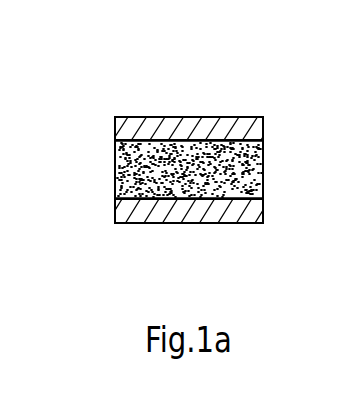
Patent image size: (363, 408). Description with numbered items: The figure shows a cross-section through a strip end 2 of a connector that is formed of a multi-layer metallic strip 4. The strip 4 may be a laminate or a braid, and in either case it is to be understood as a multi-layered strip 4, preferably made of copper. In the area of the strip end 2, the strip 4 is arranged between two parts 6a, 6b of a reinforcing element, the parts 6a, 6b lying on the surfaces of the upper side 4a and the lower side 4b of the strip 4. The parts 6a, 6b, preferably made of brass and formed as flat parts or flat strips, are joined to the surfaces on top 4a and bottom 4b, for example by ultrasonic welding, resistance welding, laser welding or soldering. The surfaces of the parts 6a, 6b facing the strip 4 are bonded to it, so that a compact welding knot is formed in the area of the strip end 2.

The strip end 2 is at (74, 66).
The multi-layer metallic strip 4 is at (242, 168).
The upper side 4a is at (218, 142).
The lower side 4b is at (155, 201).
The part of reinforcing element 6a is at (172, 125).
The part of reinforcing element 6b is at (224, 209).